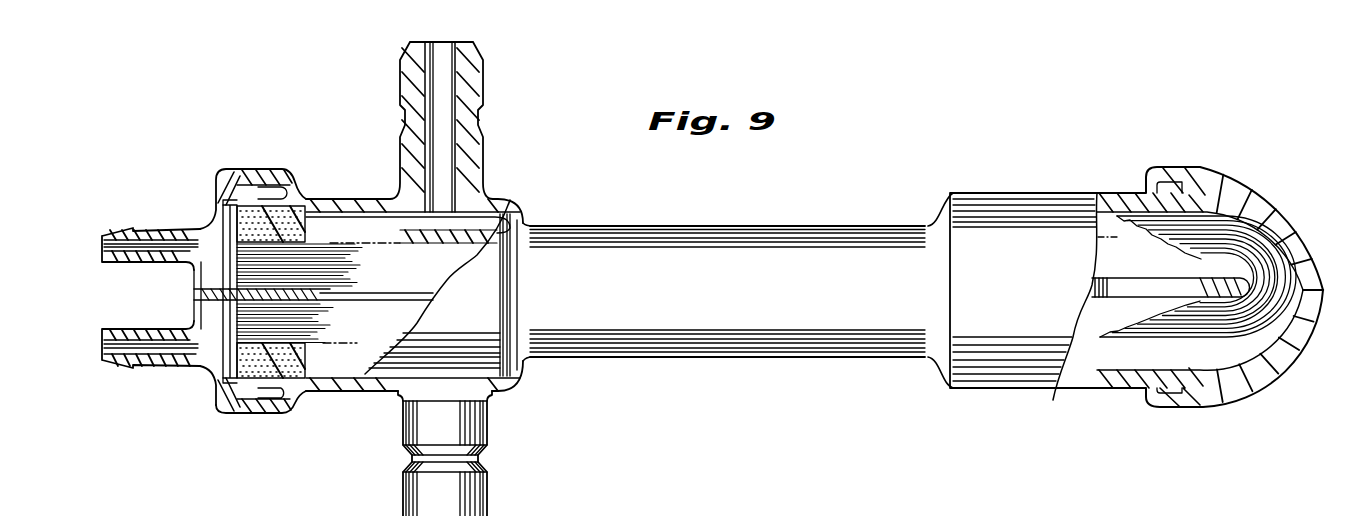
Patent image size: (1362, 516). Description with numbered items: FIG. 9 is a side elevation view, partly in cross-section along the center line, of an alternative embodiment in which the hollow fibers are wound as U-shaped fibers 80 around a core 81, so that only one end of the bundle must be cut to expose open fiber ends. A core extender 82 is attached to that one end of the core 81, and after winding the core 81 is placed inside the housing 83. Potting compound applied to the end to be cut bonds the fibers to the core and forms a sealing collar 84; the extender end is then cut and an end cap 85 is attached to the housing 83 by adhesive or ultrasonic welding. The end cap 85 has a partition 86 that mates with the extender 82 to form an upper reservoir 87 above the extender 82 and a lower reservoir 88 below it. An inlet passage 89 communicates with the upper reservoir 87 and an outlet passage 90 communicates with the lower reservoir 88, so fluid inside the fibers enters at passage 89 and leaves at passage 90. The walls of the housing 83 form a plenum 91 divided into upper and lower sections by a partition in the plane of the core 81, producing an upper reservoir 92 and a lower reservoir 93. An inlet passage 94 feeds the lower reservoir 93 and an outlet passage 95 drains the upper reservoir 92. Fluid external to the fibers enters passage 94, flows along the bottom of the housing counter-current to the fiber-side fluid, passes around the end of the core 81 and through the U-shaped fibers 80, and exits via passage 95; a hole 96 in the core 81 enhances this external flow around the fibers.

The U-shaped fibers 80 is at (1170, 330).
The core 81 is at (1053, 400).
The core extender 82 is at (240, 213).
The housing 83 is at (668, 245).
The sealing collar 84 is at (240, 212).
The end cap 85 is at (227, 397).
The partition 86 is at (222, 300).
The upper reservoir 87 is at (208, 252).
The lower reservoir 88 is at (210, 335).
The inlet passage 89 is at (150, 236).
The outlet passage 90 is at (137, 347).
The plenum 91 is at (498, 220).
The upper reservoir 92 is at (343, 222).
The lower reservoir 93 is at (333, 360).
The inlet passage 94 is at (477, 432).
The outlet passage 95 is at (440, 103).
The hole 96 is at (1122, 287).